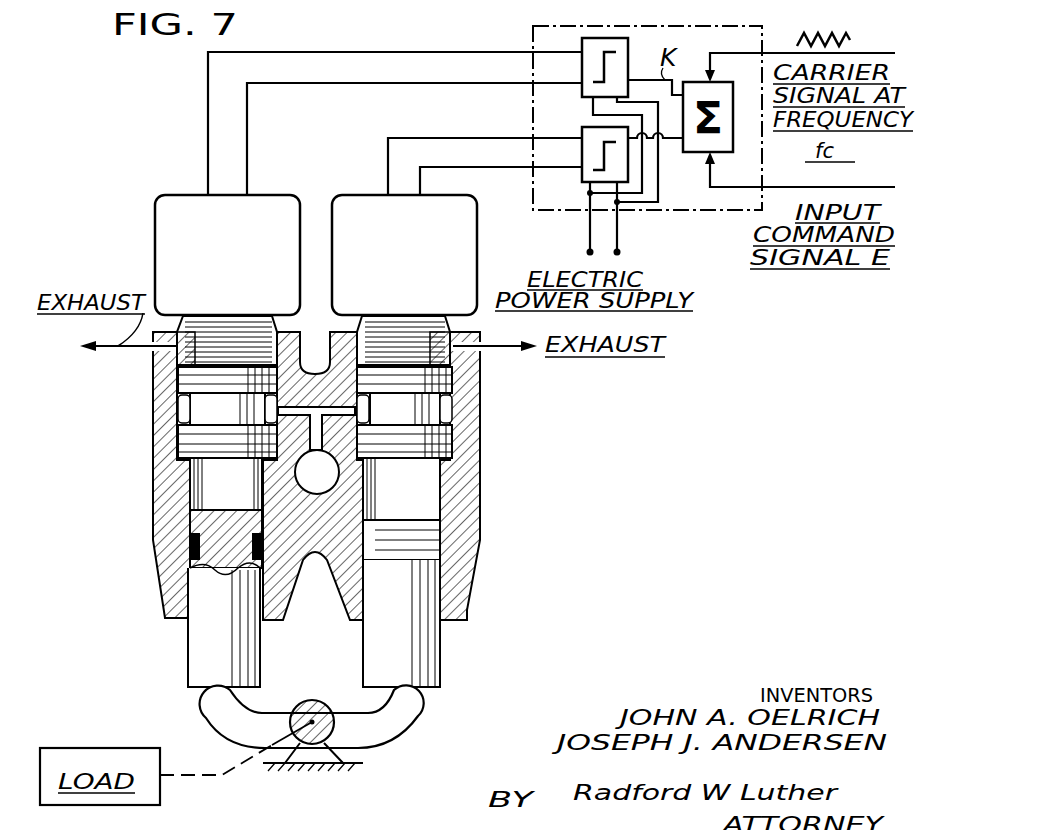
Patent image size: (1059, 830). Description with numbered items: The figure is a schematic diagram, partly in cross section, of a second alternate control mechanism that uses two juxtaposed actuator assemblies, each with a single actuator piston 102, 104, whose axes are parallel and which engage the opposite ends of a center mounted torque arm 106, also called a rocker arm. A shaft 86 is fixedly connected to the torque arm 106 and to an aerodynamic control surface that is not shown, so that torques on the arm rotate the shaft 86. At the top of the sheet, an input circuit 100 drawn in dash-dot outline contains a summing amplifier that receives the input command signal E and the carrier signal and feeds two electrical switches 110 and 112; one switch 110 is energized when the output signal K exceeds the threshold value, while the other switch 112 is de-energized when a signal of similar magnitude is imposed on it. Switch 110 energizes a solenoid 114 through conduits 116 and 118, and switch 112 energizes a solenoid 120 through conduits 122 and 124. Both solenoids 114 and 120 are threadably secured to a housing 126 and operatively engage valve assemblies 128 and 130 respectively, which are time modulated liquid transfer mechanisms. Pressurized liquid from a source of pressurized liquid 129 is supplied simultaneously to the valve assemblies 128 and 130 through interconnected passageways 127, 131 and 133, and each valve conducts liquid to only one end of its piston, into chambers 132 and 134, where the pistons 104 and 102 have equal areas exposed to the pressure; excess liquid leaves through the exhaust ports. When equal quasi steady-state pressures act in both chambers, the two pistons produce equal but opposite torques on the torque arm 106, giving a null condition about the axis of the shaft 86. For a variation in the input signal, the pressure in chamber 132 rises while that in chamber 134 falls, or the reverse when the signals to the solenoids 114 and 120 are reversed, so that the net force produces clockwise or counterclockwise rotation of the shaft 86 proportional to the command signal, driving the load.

The shaft 86 is at (320, 745).
The control circuit 100 is at (666, 24).
The actuator piston 102 is at (413, 647).
The actuator piston 104 is at (197, 657).
The torque arm 106 is at (412, 712).
The electrical switch 110 is at (600, 40).
The electrical switch 112 is at (585, 183).
The solenoid 114 is at (223, 270).
The conduit 116 is at (208, 133).
The conduit 118 is at (250, 133).
The solenoid 120 is at (405, 270).
The conduit 122 is at (480, 112).
The conduit 124 is at (450, 170).
The housing 126 is at (158, 462).
The passageway 127 is at (187, 413).
The valve assembly 128 is at (187, 388).
The source of pressurized liquid 129 is at (303, 470).
The valve assembly 130 is at (453, 382).
The passageway 131 is at (443, 410).
The chamber 132 is at (215, 490).
The passageway 133 is at (320, 432).
The chamber 134 is at (443, 485).